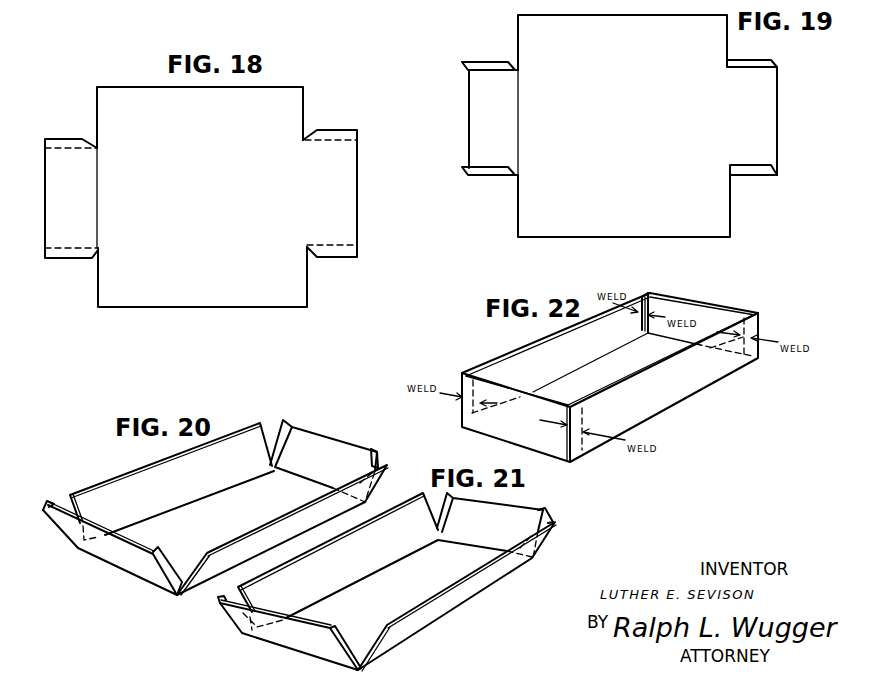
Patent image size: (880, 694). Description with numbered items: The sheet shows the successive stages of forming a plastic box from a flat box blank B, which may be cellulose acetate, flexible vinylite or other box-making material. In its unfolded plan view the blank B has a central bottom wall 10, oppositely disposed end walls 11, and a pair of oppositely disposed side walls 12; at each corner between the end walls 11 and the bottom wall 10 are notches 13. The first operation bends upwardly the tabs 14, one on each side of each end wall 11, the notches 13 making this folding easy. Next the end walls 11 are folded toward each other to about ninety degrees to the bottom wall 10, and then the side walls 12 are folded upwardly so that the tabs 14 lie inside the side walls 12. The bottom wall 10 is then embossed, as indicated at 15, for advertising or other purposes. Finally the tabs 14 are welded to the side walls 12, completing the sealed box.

In FIG. 18, the bottom wall 10 is at (200, 198).
In FIG. 19, the bottom wall 10 is at (627, 126).
In FIG. 22, the bottom wall 10 is at (628, 376).
In FIG. 20, the bottom wall 10 is at (241, 521).
In FIG. 21, the bottom wall 10 is at (461, 570).
In FIG. 18, the end walls 11 is at (68, 155).
In FIG. 19, the end walls 11 is at (488, 124).
In FIG. 22, the end walls 11 is at (697, 312).
In FIG. 20, the end walls 11 is at (322, 448).
In FIG. 21, the end walls 11 is at (513, 515).
In FIG. 18, the side walls 12 is at (282, 92).
In FIG. 19, the side walls 12 is at (632, 27).
In FIG. 22, the side walls 12 is at (517, 361).
In FIG. 20, the side walls 12 is at (108, 488).
In FIG. 21, the side walls 12 is at (401, 515).
In FIG. 18, the notches 13 is at (310, 253).
In FIG. 18, the tabs 14 is at (353, 133).
In FIG. 19, the tabs 14 is at (495, 174).
In FIG. 22, the tabs 14 is at (650, 307).
In FIG. 20, the tabs 14 is at (378, 460).
In FIG. 21, the tabs 14 is at (547, 520).
In FIG. 21, the embossing 15 is at (403, 600).
In FIG. 18, the box blank B is at (307, 120).